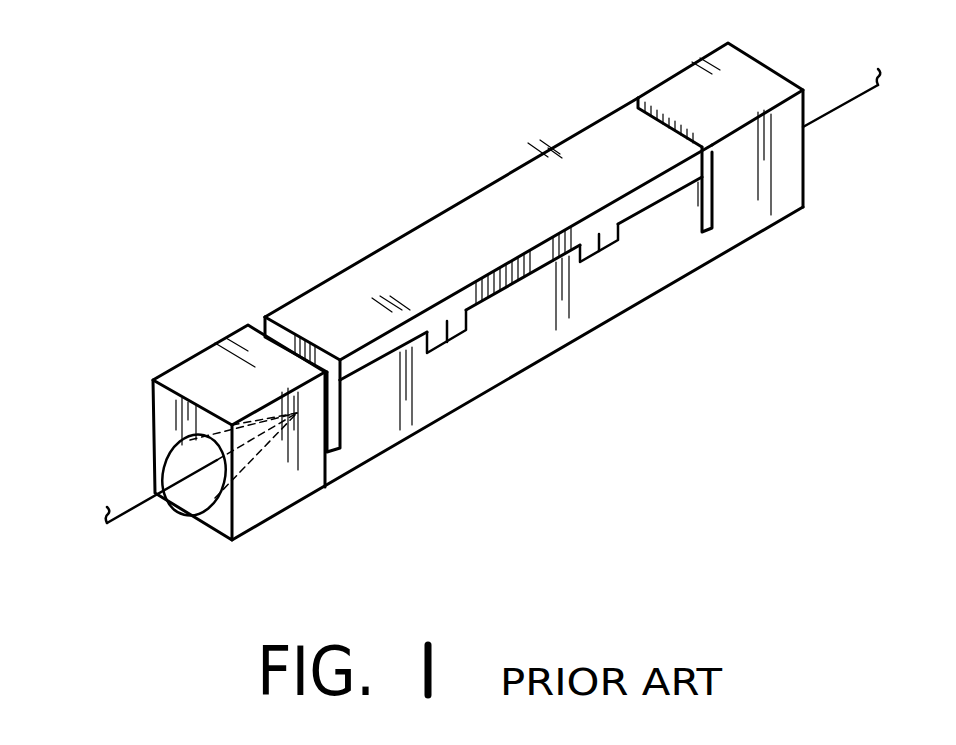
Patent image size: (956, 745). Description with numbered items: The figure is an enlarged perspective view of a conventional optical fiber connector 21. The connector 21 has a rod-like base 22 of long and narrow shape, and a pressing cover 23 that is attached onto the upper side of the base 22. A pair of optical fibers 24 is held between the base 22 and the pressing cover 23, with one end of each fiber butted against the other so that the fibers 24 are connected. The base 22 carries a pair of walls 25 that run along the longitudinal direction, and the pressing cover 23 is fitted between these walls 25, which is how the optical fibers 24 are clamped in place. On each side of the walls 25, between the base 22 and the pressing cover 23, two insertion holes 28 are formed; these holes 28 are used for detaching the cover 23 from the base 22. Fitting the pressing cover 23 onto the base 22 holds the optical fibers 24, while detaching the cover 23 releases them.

The optical fiber connector 21 is at (452, 200).
The base 22 is at (422, 415).
The pressing cover 23 is at (370, 310).
The optical fibers 24 is at (138, 510).
The walls 25 is at (528, 290).
The insertion holes 28 is at (450, 337).